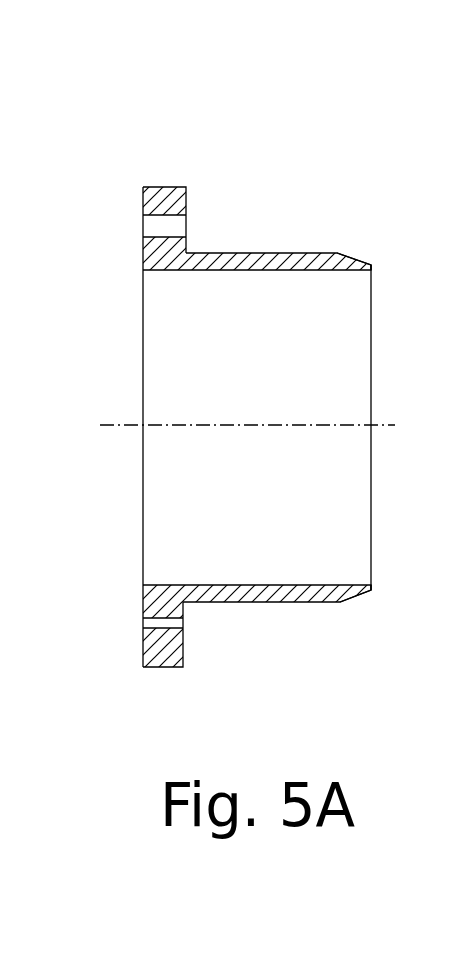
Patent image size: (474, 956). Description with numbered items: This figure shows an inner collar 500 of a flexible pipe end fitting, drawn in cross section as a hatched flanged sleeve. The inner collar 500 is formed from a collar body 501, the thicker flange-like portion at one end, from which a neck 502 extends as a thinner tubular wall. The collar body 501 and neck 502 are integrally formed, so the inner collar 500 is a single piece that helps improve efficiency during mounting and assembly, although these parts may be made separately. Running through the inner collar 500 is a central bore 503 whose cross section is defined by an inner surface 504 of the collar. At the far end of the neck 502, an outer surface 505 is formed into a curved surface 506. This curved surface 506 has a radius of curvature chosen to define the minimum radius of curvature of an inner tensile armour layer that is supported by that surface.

The inner collar 500 is at (246, 366).
The collar body 501 is at (144, 257).
The neck 502 is at (287, 271).
The central bore 503 is at (270, 407).
The inner surface 504 is at (228, 584).
The outer surface 505 is at (307, 603).
The curved surface 506 is at (363, 267).